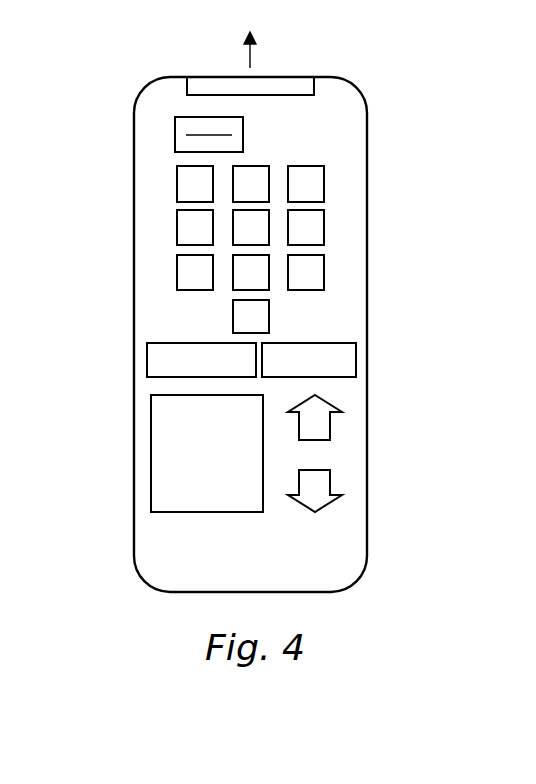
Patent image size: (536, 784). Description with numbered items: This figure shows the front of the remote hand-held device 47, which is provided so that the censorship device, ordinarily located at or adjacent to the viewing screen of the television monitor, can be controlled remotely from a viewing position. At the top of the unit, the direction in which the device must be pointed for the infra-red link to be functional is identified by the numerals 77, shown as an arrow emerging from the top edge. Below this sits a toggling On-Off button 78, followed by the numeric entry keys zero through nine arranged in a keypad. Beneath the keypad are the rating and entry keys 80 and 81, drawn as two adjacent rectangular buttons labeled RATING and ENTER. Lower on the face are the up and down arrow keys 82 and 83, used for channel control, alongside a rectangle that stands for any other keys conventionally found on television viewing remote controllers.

The remote hand-held device 47 is at (122, 226).
The pointing direction indicator 77 is at (250, 52).
The toggling On-Off button 78 is at (232, 137).
The rating key 80 is at (148, 362).
The entry key 81 is at (354, 364).
The up arrow key 82 is at (314, 420).
The down arrow key 83 is at (314, 482).